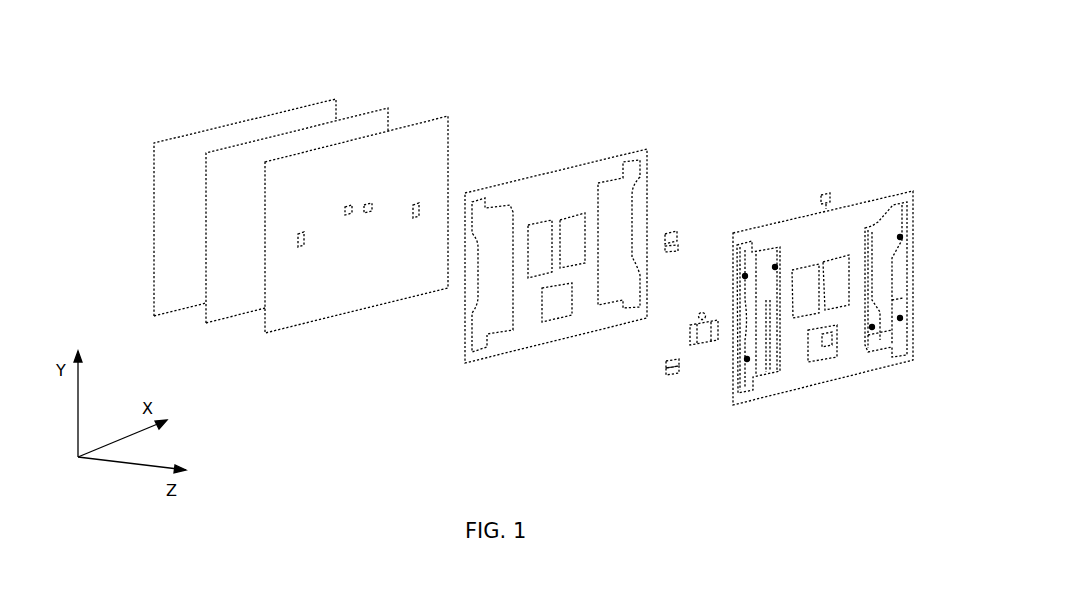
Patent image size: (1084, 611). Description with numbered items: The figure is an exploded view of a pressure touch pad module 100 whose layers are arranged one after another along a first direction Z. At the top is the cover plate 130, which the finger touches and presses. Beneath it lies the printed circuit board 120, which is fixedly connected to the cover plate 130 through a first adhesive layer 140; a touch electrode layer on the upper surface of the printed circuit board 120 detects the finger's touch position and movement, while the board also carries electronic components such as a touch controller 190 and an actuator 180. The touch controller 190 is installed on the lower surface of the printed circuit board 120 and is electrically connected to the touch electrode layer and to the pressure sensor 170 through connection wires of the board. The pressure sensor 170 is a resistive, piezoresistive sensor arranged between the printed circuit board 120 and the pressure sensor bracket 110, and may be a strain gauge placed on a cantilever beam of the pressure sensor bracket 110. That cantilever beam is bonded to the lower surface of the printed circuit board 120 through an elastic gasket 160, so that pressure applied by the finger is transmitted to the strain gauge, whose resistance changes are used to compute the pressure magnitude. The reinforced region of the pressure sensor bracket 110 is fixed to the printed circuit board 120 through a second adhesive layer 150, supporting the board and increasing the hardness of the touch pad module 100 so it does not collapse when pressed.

The pressure touch pad module 100 is at (773, 100).
The pressure sensor bracket 110 is at (840, 228).
The printed circuit board 120 is at (390, 163).
The cover plate 130 is at (258, 127).
The first adhesive layer 140 is at (344, 127).
The second adhesive layer 150 is at (552, 192).
The elastic gasket 160 is at (671, 232).
The pressure sensor 170 is at (680, 247).
The actuator 180 is at (698, 346).
The touch controller 190 is at (370, 205).